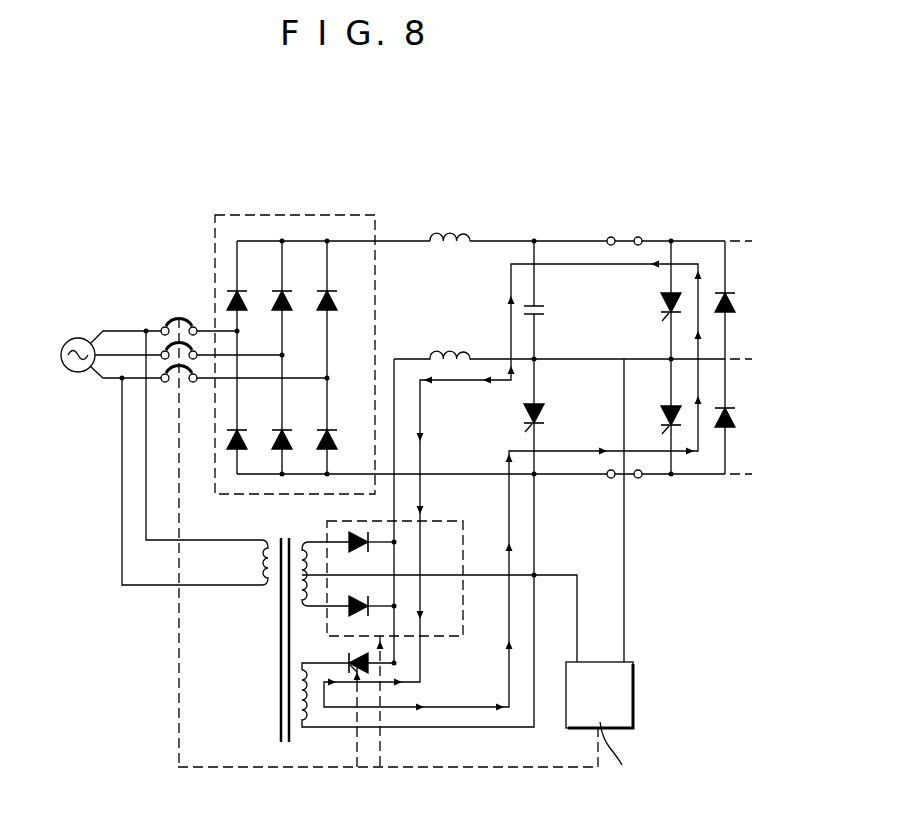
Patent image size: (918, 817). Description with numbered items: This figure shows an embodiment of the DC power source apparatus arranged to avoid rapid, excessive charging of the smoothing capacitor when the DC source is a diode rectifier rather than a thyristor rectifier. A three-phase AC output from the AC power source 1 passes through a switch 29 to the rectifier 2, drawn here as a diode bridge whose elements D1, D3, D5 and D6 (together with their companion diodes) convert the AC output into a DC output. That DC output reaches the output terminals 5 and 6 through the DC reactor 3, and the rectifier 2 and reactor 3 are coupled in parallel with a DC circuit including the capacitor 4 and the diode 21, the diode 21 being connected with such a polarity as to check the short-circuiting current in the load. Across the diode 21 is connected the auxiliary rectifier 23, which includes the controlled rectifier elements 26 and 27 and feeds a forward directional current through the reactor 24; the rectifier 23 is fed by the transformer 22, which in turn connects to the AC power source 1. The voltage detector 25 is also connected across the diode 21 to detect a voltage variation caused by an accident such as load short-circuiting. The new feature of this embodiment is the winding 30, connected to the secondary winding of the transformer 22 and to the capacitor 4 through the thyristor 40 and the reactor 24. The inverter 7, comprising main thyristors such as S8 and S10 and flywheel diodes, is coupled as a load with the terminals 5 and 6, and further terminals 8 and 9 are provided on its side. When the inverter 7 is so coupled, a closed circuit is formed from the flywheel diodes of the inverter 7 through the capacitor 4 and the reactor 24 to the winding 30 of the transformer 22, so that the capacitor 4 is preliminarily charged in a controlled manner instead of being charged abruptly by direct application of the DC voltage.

The AC power source 1 is at (81, 372).
The rectifier 2 is at (303, 354).
The DC reactor 3 is at (449, 252).
The capacitor 4 is at (547, 311).
The output terminal 5 is at (611, 237).
The output terminal 6 is at (611, 479).
The inverter 7 is at (680, 376).
The terminal 8 is at (638, 237).
The terminal 9 is at (638, 479).
The diode 21 is at (544, 413).
The transformer 22 is at (276, 595).
The rectifier 23 is at (395, 560).
The reactor 24 is at (448, 353).
The voltage detector 25 is at (628, 708).
The controlled rectifier element 26 is at (358, 533).
The controlled rectifier element 27 is at (375, 611).
The switch 29 is at (179, 320).
The new winding 30 is at (305, 733).
The thyristor 40 is at (342, 660).
The flywheel diode D1 is at (247, 286).
The flywheel diode D3 is at (337, 286).
The diode D5 is at (294, 431).
The diode D6 is at (339, 431).
The main thyristor S8 is at (663, 318).
The main thyristor S10 is at (658, 405).